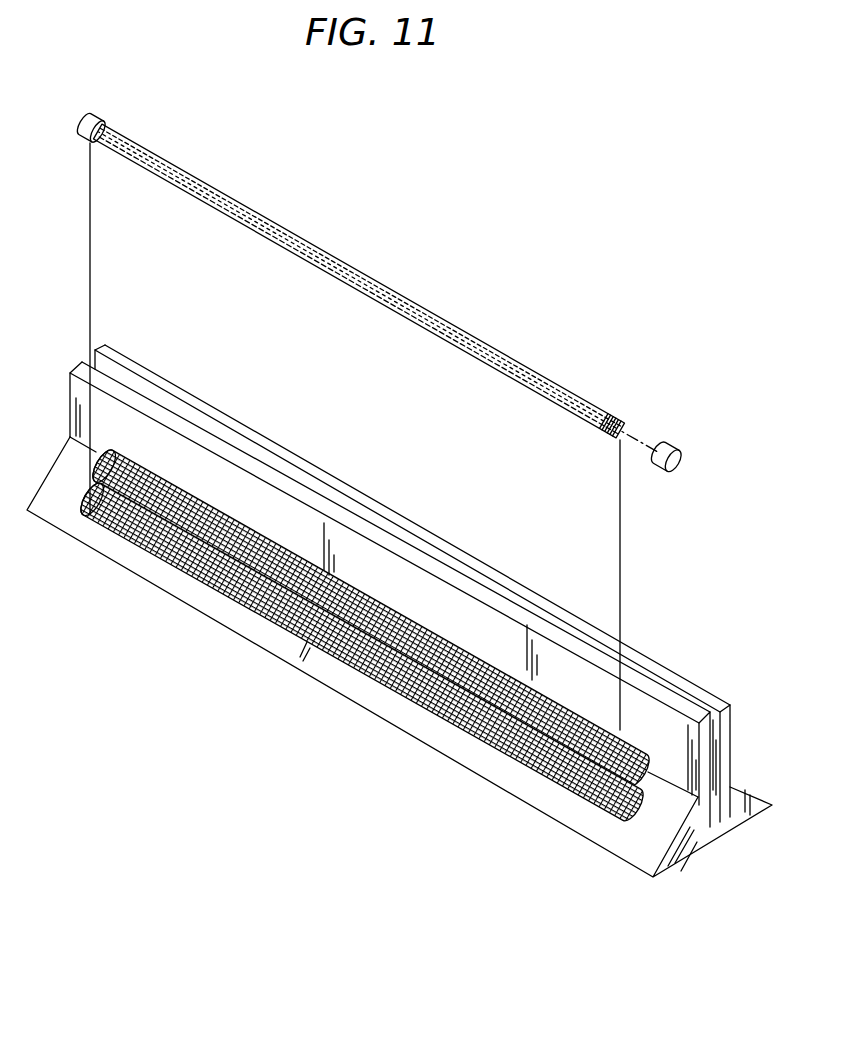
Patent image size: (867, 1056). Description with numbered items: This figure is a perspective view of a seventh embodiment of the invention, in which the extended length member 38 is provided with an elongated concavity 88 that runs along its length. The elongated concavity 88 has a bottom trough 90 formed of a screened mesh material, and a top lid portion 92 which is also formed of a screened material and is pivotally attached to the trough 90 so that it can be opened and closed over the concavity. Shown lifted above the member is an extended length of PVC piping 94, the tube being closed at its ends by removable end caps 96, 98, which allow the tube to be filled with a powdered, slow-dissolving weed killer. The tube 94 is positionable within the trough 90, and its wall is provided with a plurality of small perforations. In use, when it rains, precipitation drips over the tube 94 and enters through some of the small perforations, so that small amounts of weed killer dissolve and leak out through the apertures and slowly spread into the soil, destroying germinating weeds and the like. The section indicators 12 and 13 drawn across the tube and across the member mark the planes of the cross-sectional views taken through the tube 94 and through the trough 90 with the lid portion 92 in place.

The extended length member 38 is at (535, 812).
The elongated concavity 88 is at (233, 598).
The bottom trough 90 is at (97, 517).
The top lid portion 92 is at (420, 630).
The PVC piping 94 is at (440, 319).
The removable end cap 96 is at (97, 115).
The removable end cap 98 is at (683, 453).
The section line 12- 12 is at (207, 254).
The section line 13- 13 is at (286, 739).